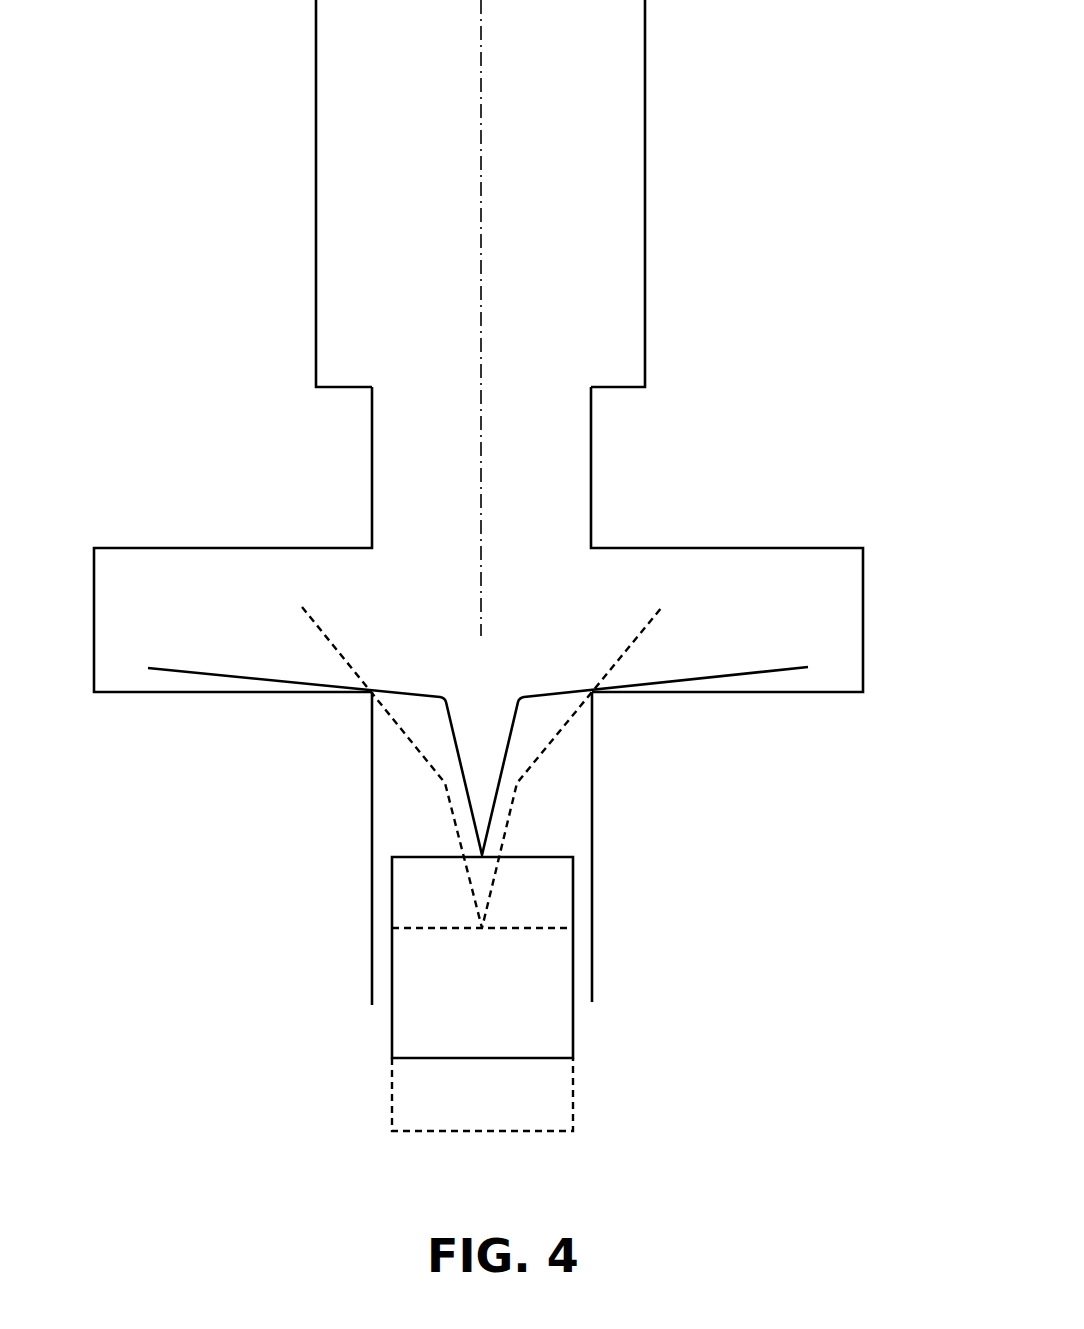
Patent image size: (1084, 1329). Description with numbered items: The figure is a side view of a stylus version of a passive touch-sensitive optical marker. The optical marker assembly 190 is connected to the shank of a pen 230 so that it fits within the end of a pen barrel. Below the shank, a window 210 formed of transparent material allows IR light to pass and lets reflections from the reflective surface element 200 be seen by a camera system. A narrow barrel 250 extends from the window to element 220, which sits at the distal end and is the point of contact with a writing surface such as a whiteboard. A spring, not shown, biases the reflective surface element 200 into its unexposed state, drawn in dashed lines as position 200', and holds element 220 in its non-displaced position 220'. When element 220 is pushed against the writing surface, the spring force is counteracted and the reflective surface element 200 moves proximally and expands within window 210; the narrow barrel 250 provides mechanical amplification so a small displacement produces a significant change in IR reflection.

The optical marker assembly 190 is at (787, 498).
The reflective surface element 200 is at (486, 727).
The reflective surface element in unexposed state 200' is at (482, 753).
The window 210 is at (240, 548).
The element 220 is at (539, 968).
The element in non-displaced state 220' is at (430, 1105).
The shank of a pen 230 is at (315, 273).
The narrow barrel 250 is at (592, 763).